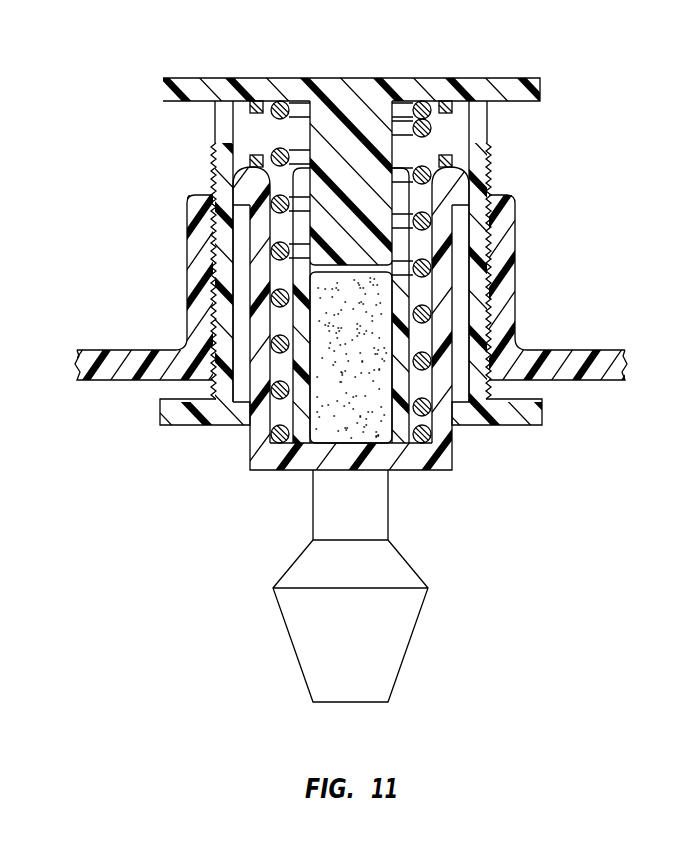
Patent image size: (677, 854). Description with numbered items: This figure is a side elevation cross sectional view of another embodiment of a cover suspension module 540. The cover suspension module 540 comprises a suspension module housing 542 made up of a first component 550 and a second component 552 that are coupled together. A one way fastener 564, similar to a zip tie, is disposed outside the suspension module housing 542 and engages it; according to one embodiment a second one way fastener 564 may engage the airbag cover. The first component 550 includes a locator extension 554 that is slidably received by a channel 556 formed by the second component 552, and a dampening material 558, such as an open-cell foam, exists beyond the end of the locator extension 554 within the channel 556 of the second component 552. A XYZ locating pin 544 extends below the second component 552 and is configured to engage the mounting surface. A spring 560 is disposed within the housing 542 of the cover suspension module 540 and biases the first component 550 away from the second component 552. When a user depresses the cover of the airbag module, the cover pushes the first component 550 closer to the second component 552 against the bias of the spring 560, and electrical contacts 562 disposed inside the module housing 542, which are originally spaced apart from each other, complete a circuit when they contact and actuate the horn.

The cover suspension module 540 is at (152, 447).
The suspension module housing 542 is at (600, 440).
The XYZ locating pin 544 is at (317, 622).
The first component 550 is at (487, 421).
The second component 552 is at (453, 470).
The locator extension 554 is at (362, 165).
The channel 556 is at (307, 347).
The dampening material 558 is at (342, 420).
The spring 560 is at (272, 388).
The electrical contacts 562 is at (258, 111).
The one way fastener 564 is at (507, 262).